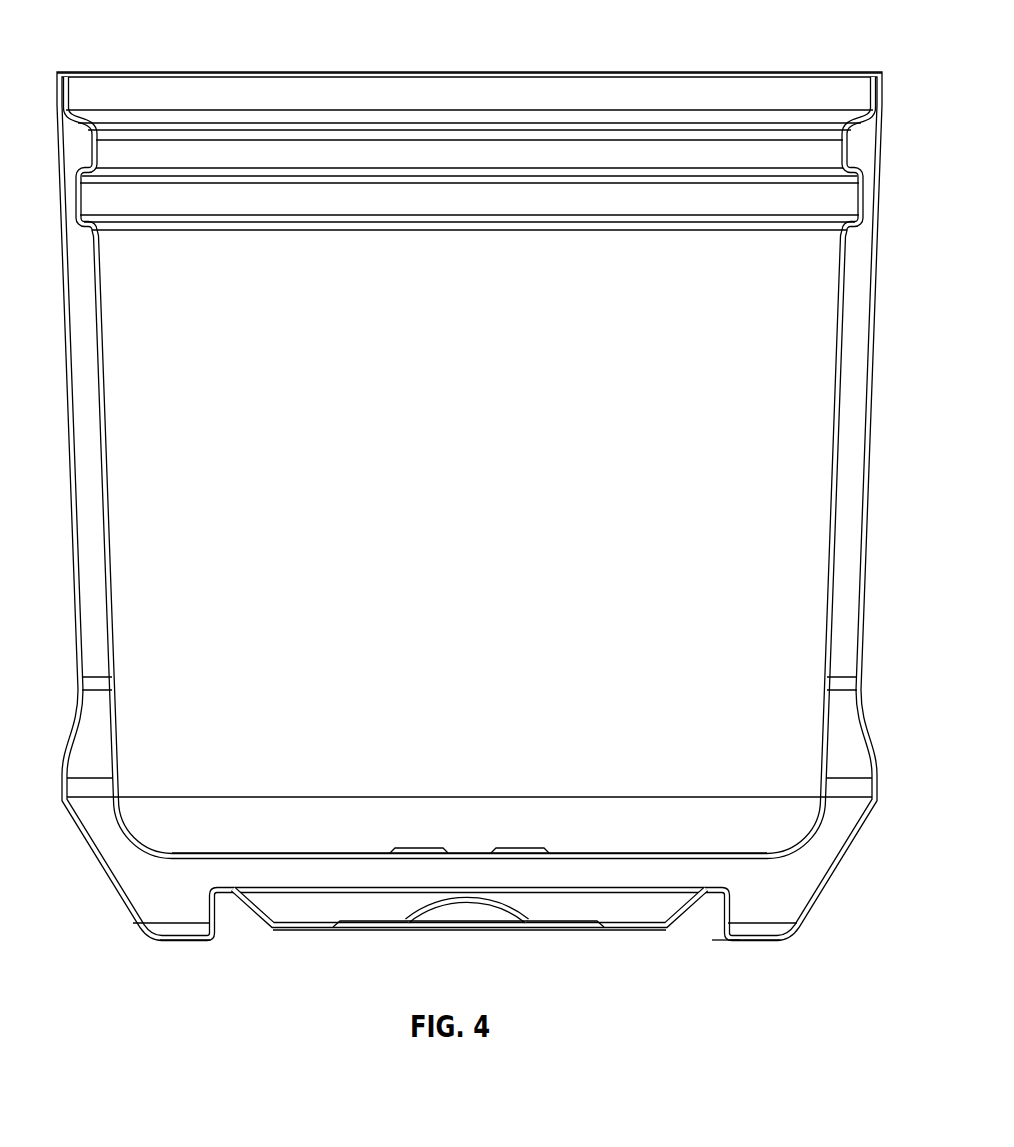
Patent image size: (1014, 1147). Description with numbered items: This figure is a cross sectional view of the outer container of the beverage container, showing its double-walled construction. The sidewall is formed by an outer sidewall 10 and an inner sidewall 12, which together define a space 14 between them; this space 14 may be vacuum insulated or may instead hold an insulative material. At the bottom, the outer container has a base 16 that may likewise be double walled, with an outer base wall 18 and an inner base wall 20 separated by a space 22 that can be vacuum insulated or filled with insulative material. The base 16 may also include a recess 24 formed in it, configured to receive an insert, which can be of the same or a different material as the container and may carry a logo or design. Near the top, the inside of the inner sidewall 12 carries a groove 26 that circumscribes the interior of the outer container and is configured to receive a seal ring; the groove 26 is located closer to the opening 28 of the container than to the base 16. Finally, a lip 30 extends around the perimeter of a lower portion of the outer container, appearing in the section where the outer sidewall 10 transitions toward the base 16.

The outer sidewall 10 is at (63, 322).
The inner sidewall 12 is at (106, 357).
The space 14 is at (90, 488).
The base 16 is at (768, 928).
The outer base wall 18 is at (725, 942).
The inner base wall 20 is at (649, 852).
The space 22 is at (305, 882).
The recess 24 is at (240, 930).
The groove 26 is at (84, 196).
The opening 28 is at (640, 72).
The lip 30 is at (872, 780).